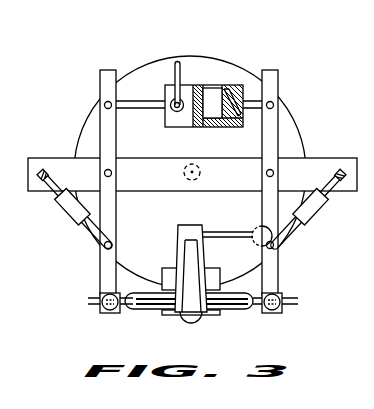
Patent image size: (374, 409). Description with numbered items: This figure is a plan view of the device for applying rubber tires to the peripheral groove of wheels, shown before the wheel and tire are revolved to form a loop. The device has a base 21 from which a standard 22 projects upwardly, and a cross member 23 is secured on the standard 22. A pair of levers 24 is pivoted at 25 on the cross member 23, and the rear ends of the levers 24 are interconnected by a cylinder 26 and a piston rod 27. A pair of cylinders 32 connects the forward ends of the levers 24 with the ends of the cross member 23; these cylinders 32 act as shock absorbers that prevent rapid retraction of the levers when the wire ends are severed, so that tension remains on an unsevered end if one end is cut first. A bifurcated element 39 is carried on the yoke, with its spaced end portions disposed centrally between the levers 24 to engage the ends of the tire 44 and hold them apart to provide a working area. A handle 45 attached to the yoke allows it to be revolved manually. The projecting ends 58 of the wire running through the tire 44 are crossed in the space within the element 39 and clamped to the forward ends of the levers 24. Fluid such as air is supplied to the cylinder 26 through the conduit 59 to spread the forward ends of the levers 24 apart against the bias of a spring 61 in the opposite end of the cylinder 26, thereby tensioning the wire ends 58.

The base 21 is at (238, 86).
The standard 22 is at (202, 163).
The cross member 23 is at (323, 168).
The lever 24 is at (110, 70).
The pivot 25 is at (105, 169).
The cylinder 26 is at (233, 92).
The piston rod 27 is at (208, 90).
The cylinder 32 is at (78, 213).
The bifurcated element 39 is at (178, 246).
The tire 44 is at (241, 309).
The handle 45 is at (253, 228).
The projecting ends of the wire 58 is at (120, 305).
The conduit 59 is at (173, 66).
The spring 61 is at (225, 88).